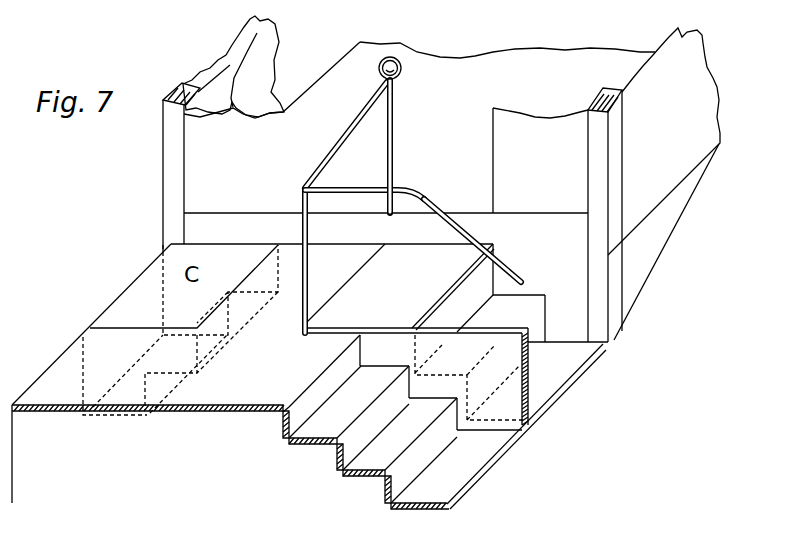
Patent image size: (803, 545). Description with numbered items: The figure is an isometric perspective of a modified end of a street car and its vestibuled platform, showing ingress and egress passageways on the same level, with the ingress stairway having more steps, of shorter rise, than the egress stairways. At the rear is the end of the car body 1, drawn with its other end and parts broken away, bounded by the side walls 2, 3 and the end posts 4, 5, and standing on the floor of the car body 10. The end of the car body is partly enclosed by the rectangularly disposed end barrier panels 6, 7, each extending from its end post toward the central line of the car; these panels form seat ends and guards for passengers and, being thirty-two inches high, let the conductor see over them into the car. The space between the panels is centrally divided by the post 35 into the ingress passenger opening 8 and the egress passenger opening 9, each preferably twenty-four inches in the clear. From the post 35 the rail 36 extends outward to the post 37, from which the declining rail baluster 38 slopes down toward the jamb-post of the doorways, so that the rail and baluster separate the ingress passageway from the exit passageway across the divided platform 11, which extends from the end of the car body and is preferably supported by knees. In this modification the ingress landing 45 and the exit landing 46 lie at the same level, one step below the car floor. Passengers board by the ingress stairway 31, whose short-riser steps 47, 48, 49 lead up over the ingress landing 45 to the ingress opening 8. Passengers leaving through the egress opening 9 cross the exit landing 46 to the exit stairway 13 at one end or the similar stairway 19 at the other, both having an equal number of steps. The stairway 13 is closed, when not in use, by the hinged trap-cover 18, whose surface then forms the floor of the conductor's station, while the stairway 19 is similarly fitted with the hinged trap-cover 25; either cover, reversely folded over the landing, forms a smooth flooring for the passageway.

The end of the car body 1 is at (478, 65).
The side wall 2 is at (240, 67).
The side wall 3 is at (683, 103).
The end post 4 is at (177, 157).
The end post 5 is at (610, 193).
The end barrier panel 6 is at (272, 107).
The end barrier panel 7 is at (518, 160).
The ingress passenger opening 8 is at (364, 201).
The egress passenger opening 9 is at (472, 236).
The floor of the car body 10 is at (386, 143).
The divided platform 11 is at (197, 412).
The exit stairway 13 is at (125, 290).
The hinged trap-cover 18 is at (180, 330).
The stairway 19 is at (570, 377).
The hinged trap-cover 25 is at (400, 287).
The ingress stairway 31 is at (520, 437).
The post 35 is at (395, 122).
The rail 36 is at (353, 128).
The post 37 is at (320, 261).
The declining rail baluster 38 is at (460, 228).
The ingress landing 45 is at (315, 371).
The exit landing 46 is at (473, 295).
The short-riser step 47 is at (456, 466).
The short-riser step 48 is at (400, 434).
The short-riser step 49 is at (349, 386).